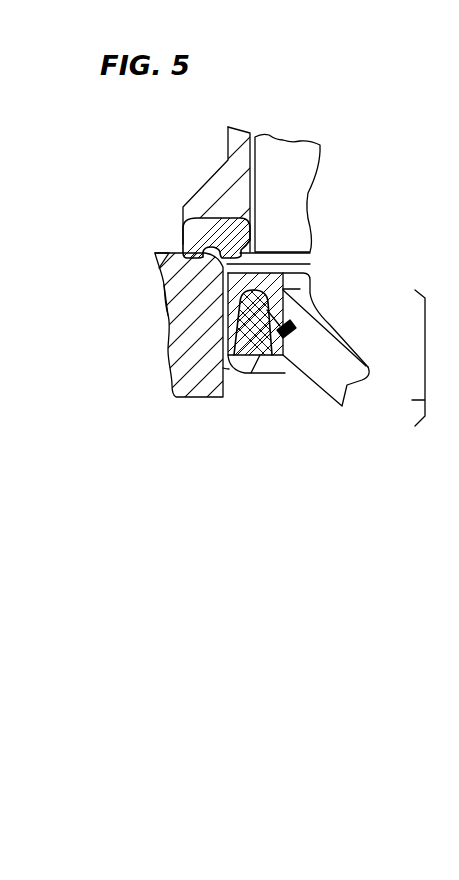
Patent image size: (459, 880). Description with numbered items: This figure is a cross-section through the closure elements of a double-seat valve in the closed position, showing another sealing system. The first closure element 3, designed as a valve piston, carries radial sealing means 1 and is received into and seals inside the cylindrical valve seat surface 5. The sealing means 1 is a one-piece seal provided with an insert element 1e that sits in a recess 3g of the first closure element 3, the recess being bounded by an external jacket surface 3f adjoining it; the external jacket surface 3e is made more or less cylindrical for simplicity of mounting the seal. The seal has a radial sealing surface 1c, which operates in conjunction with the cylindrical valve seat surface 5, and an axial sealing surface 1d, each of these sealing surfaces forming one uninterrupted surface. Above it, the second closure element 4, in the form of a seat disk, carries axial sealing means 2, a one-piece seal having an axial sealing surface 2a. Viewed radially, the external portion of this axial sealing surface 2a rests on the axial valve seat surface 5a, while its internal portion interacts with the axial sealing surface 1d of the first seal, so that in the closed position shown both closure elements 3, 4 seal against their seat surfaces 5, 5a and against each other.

The sealing means 2 is at (238, 218).
The second closure element 4 is at (250, 198).
The axial sealing surface 2a is at (266, 254).
The axial valve seat surface 5a is at (163, 260).
The radial sealing means 1 is at (200, 281).
The radial sealing surface 1c is at (200, 307).
The axial sealing surface 1d is at (310, 265).
The first closure element 3 is at (311, 347).
The external jacket surface 3e is at (300, 290).
The external jacket surface 3f is at (285, 373).
The recess 3g is at (405, 358).
The cylindrical valve seat surface 5 is at (229, 369).
The insert element 1e is at (274, 356).